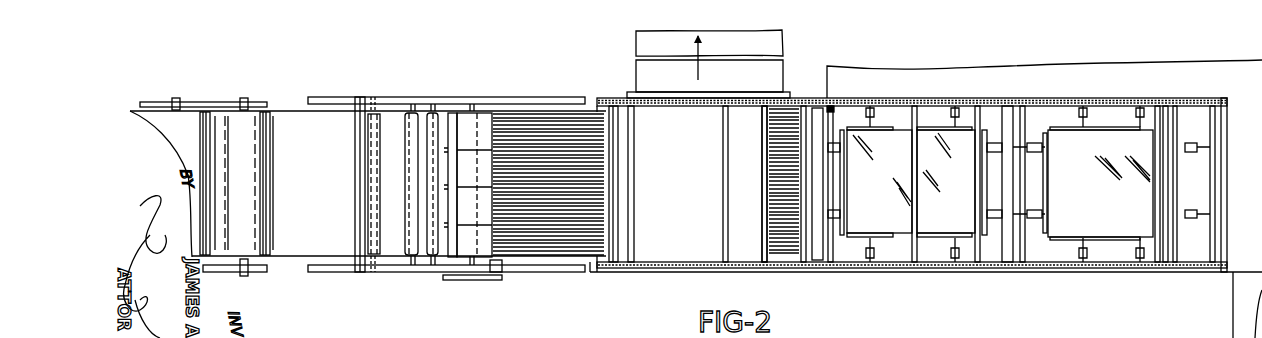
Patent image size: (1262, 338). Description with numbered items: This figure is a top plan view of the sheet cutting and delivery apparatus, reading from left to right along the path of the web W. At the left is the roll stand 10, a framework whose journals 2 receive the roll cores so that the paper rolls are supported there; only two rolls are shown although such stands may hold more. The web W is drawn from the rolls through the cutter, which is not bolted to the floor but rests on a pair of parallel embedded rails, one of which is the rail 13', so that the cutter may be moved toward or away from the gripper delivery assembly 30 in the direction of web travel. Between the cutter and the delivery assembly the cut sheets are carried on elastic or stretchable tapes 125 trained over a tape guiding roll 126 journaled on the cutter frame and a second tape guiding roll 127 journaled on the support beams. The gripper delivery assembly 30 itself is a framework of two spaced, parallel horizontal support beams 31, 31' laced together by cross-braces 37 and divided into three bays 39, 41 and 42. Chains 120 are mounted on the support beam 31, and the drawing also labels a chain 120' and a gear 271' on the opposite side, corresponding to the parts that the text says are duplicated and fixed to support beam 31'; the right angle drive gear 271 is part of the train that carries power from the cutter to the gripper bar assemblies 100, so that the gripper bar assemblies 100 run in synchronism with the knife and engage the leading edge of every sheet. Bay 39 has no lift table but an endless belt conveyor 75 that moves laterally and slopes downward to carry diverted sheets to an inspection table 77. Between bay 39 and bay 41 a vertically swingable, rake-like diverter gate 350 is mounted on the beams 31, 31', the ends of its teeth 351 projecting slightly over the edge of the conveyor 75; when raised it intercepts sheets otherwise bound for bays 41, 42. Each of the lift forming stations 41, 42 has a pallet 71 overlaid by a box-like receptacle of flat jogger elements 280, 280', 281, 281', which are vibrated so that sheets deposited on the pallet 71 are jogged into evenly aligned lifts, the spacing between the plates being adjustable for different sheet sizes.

The roll stand 10 is at (222, 97).
The journals 2 is at (246, 100).
The web W is at (292, 120).
The rail 13' is at (446, 187).
The tape guiding roll 126 is at (491, 104).
The elastic tapes 125 is at (570, 118).
The tape guiding roll 127 is at (596, 270).
The chains 120 is at (912, 88).
The lower frame rail 120' is at (912, 283).
The gripper delivery assembly 30 is at (990, 276).
The right angle drive gear 271 is at (1234, 179).
The lower end cap 271' is at (1232, 281).
The cross-braces 37 is at (727, 120).
The inspection table 77 is at (676, 42).
The endless belt conveyor 75 is at (702, 229).
The bay 39 is at (672, 250).
The teeth 351 is at (768, 232).
The diverter gate 350 is at (790, 246).
The gripper bar assemblies 100 is at (640, 246).
The bay 41 is at (897, 247).
The bay 42 is at (1066, 247).
The support beam 31 is at (1005, 167).
The support beam 31' is at (1095, 289).
The pallet 71 is at (872, 226).
The jogger element 280' is at (993, 146).
The jogger element 280 is at (993, 221).
The jogger element 281 is at (966, 182).
The jogger element 281' is at (1044, 182).